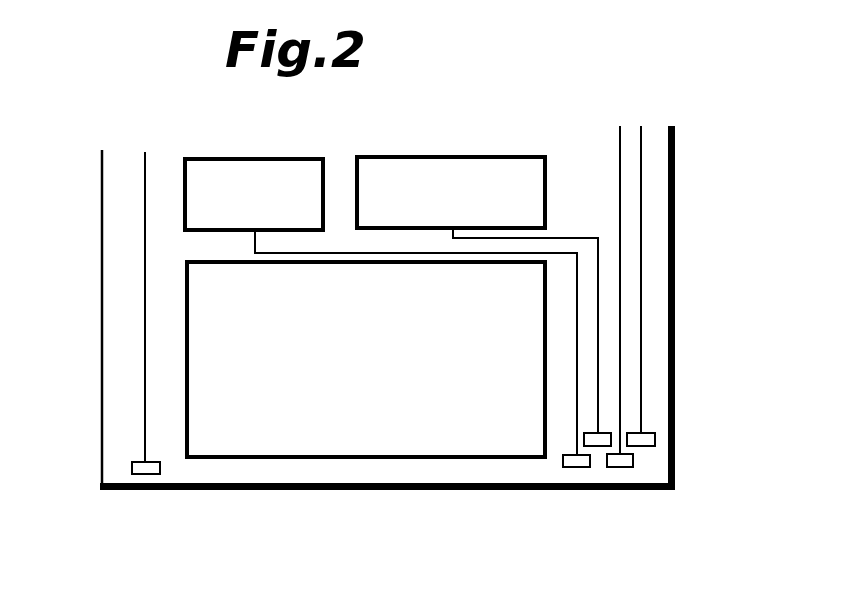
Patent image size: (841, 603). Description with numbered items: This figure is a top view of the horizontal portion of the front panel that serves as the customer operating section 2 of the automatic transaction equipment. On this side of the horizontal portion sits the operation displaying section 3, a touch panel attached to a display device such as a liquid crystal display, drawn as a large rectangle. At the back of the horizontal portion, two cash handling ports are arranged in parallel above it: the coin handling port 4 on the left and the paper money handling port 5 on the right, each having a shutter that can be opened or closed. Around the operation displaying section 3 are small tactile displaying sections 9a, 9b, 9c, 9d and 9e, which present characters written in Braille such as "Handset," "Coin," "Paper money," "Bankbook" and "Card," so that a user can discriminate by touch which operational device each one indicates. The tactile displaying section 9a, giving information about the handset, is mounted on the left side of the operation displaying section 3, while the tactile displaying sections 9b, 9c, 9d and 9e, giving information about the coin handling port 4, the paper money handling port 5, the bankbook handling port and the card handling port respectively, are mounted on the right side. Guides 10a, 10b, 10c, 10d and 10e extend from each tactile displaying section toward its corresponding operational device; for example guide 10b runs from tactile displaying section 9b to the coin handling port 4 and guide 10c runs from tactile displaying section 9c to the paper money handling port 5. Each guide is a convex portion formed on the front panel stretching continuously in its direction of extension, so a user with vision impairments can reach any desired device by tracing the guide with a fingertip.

The customer operating section 2 is at (107, 208).
The operation displaying section 3 is at (313, 442).
The coin handling port 4 is at (268, 158).
The paper money handling port 5 is at (463, 157).
The tactile displaying section 9a is at (132, 472).
The tactile displaying section 9b is at (572, 467).
The tactile displaying section 9c is at (600, 446).
The tactile displaying section 9d is at (614, 467).
The tactile displaying section 9e is at (640, 446).
The guide 10a is at (145, 412).
The guide 10b is at (577, 333).
The guide 10c is at (598, 367).
The guide 10d is at (620, 388).
The guide 10e is at (641, 414).